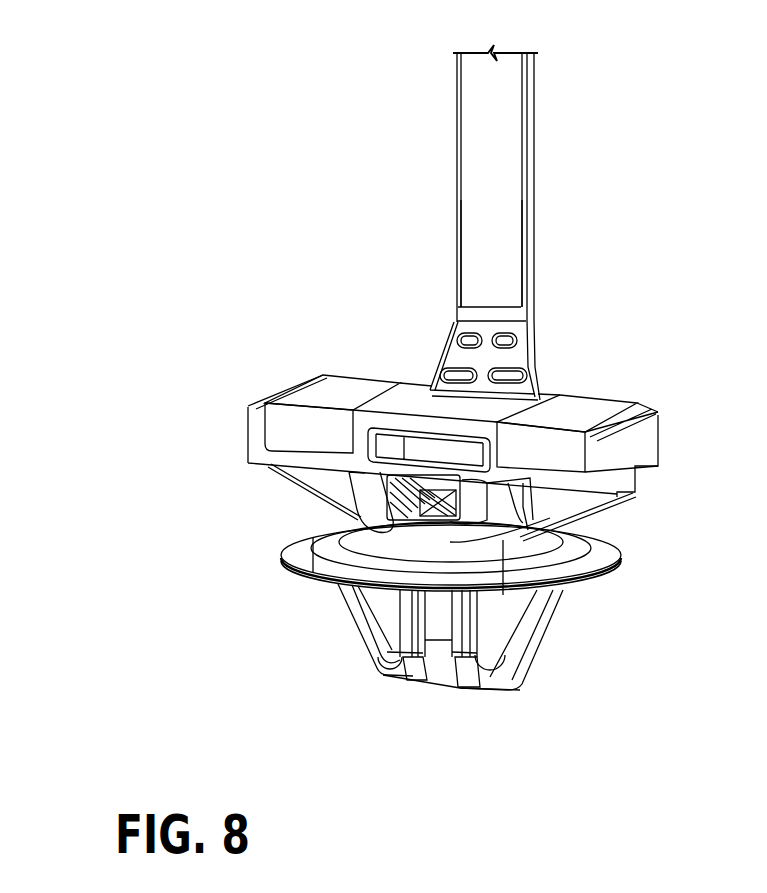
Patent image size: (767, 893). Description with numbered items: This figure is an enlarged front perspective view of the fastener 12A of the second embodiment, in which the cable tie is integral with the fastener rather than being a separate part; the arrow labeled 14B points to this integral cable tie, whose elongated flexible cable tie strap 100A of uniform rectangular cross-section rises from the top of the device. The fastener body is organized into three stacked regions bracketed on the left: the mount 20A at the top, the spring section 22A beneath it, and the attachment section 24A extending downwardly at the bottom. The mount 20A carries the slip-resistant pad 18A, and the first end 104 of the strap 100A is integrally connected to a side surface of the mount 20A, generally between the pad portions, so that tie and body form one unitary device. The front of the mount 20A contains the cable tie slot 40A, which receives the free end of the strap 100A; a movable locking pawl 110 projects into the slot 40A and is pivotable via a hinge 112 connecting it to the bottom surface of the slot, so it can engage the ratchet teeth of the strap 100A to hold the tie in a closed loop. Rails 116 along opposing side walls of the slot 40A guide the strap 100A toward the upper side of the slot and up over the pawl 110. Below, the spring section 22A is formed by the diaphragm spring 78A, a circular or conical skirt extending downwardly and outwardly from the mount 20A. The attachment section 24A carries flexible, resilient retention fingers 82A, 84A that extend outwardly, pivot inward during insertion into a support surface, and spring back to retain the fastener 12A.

The fastener 12A is at (240, 225).
The cable tie strap 100A is at (457, 232).
The strap bracket 14B is at (541, 282).
The first end 104 is at (440, 360).
The slip-resistant pad 18A is at (429, 407).
The mount 20A is at (188, 383).
The spring section 22A is at (410, 555).
The attachment section 24A is at (376, 636).
The cable tie slot 40A is at (350, 478).
The locking pawl 110 is at (618, 468).
The rails 116 is at (355, 490).
The hinge 112 is at (447, 493).
The diaphragm spring 78A is at (612, 563).
The retention finger 82A is at (347, 610).
The retention finger 84A is at (542, 612).